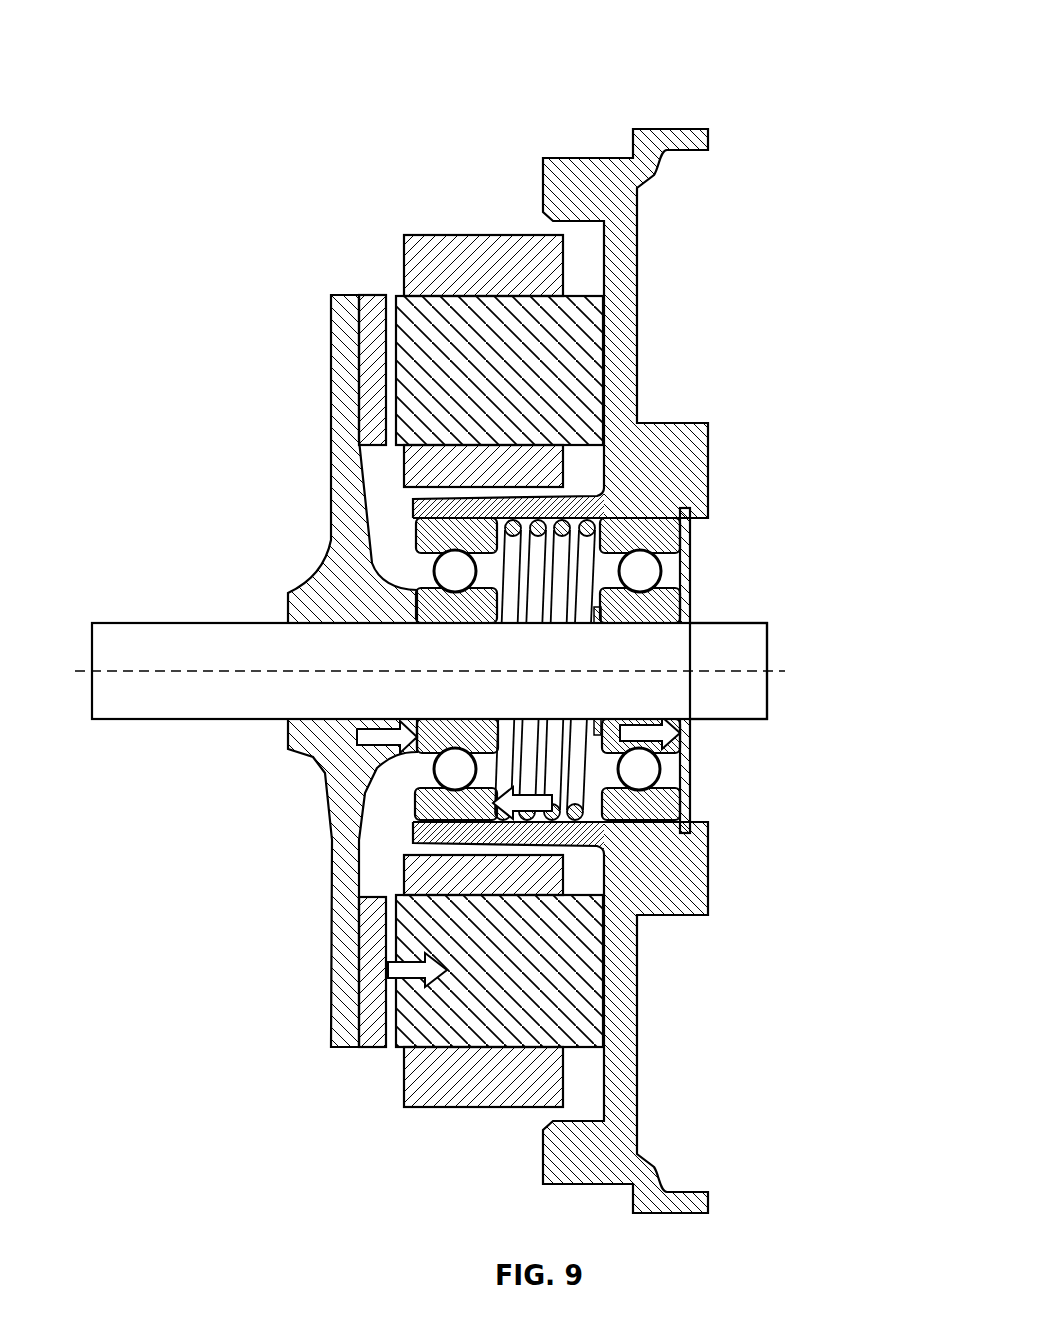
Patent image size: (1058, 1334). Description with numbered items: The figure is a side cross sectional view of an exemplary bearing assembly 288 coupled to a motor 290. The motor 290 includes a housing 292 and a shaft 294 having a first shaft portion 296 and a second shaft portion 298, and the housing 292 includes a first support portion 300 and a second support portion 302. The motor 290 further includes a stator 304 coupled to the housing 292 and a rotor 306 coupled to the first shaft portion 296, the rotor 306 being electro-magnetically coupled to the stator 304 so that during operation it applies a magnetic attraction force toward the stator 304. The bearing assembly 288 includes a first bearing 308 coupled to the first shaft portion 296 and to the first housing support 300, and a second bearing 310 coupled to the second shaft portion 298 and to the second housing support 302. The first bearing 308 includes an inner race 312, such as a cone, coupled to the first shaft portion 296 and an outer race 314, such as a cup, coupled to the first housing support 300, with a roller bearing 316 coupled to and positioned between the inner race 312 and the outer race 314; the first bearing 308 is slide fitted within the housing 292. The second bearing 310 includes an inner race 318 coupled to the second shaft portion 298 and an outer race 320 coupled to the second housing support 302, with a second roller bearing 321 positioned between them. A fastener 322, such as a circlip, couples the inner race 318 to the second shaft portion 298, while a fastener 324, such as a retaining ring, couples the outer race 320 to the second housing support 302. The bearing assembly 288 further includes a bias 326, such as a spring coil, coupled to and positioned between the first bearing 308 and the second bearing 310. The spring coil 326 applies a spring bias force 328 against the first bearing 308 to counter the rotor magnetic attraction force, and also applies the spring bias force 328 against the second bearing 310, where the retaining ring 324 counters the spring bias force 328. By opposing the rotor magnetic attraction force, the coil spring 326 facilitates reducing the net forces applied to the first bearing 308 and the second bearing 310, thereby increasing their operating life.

The bearing assembly 288 is at (310, 1043).
The motor 290 is at (793, 52).
The housing 292 is at (630, 255).
The shaft 294 is at (135, 712).
The first shaft portion 296 is at (258, 633).
The second shaft portion 298 is at (740, 690).
The first support portion 300 is at (443, 510).
The second support portion 302 is at (653, 457).
The stator 304 is at (467, 338).
The rotor 306 is at (338, 310).
The first bearing 308 is at (432, 602).
The second bearing 310 is at (681, 761).
The inner race 312 is at (452, 571).
The outer race 314 is at (445, 533).
The roller bearing 316 is at (410, 538).
The inner race 318 is at (673, 598).
The outer race 320 is at (672, 545).
The second roller bearing 321 is at (638, 769).
The fastener 322 is at (726, 614).
The fastener 324 is at (685, 742).
The bias 326 is at (603, 795).
The spring bias force 328 is at (525, 808).